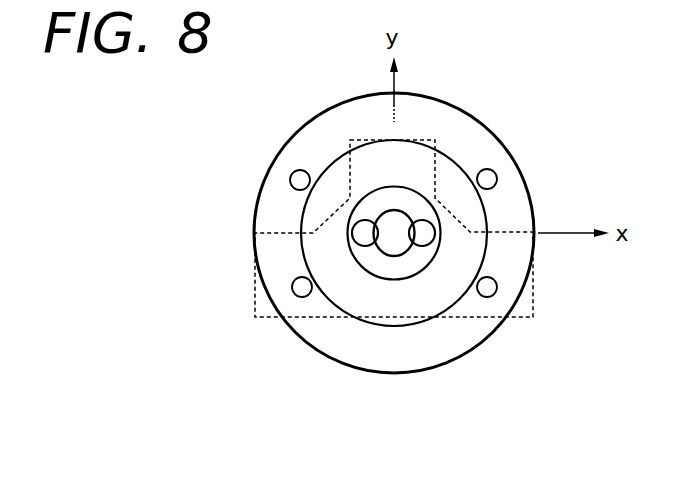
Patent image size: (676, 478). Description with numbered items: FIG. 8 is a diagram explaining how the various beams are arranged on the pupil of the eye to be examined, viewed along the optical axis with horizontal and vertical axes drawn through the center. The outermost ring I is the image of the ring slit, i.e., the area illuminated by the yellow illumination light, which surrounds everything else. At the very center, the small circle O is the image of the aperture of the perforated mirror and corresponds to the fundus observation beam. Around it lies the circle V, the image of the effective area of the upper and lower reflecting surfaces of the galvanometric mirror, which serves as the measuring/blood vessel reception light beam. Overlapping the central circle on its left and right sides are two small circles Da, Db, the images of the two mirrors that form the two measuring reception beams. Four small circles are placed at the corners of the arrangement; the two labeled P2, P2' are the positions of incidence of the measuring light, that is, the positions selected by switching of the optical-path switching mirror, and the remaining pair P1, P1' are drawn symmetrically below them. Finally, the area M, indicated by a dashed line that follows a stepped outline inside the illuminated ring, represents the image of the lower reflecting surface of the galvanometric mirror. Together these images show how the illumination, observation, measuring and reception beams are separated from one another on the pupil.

The image of the ring slit I is at (322, 128).
The image of the aperture of the perforated mirror O is at (397, 218).
The image of the effective area of the galvanometric mirror reflecting surfaces V is at (402, 270).
The image of the mirror (first measuring reception beam) Da is at (420, 242).
The image of the mirror (second measuring reception beam) Db is at (363, 242).
The pupil position P1 is at (537, 298).
The pupil position P1' is at (249, 295).
The position of incidence of the measuring light P2 is at (513, 167).
The position of incidence of the measuring light P2' is at (254, 162).
The image of the lower reflecting surface of the galvanometric mirror M is at (522, 318).